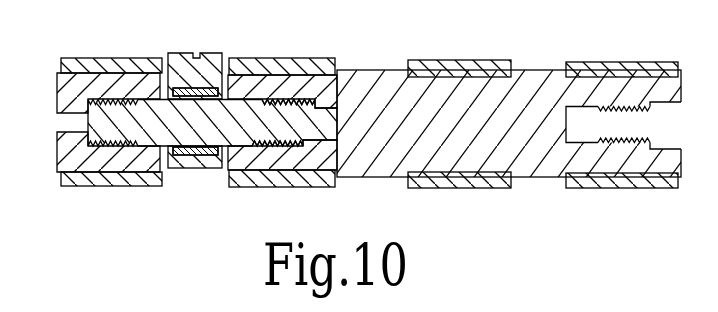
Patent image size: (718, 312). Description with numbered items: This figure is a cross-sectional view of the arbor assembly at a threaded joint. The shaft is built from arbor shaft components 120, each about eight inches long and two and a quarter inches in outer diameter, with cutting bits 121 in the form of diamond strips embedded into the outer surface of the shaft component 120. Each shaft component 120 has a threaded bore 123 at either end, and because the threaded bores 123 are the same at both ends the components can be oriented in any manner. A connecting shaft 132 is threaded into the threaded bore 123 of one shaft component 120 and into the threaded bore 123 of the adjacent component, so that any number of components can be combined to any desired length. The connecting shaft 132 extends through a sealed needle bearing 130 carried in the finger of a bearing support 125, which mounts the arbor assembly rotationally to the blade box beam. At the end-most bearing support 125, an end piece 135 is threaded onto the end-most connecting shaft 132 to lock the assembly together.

The arbor shaft component 120 is at (543, 158).
The cutting bits 121 is at (502, 68).
The threaded bore 123 is at (287, 108).
The bearing support 125 is at (183, 58).
The bearing 130 is at (203, 160).
The connecting shaft 132 is at (338, 103).
The end piece 135 is at (132, 178).